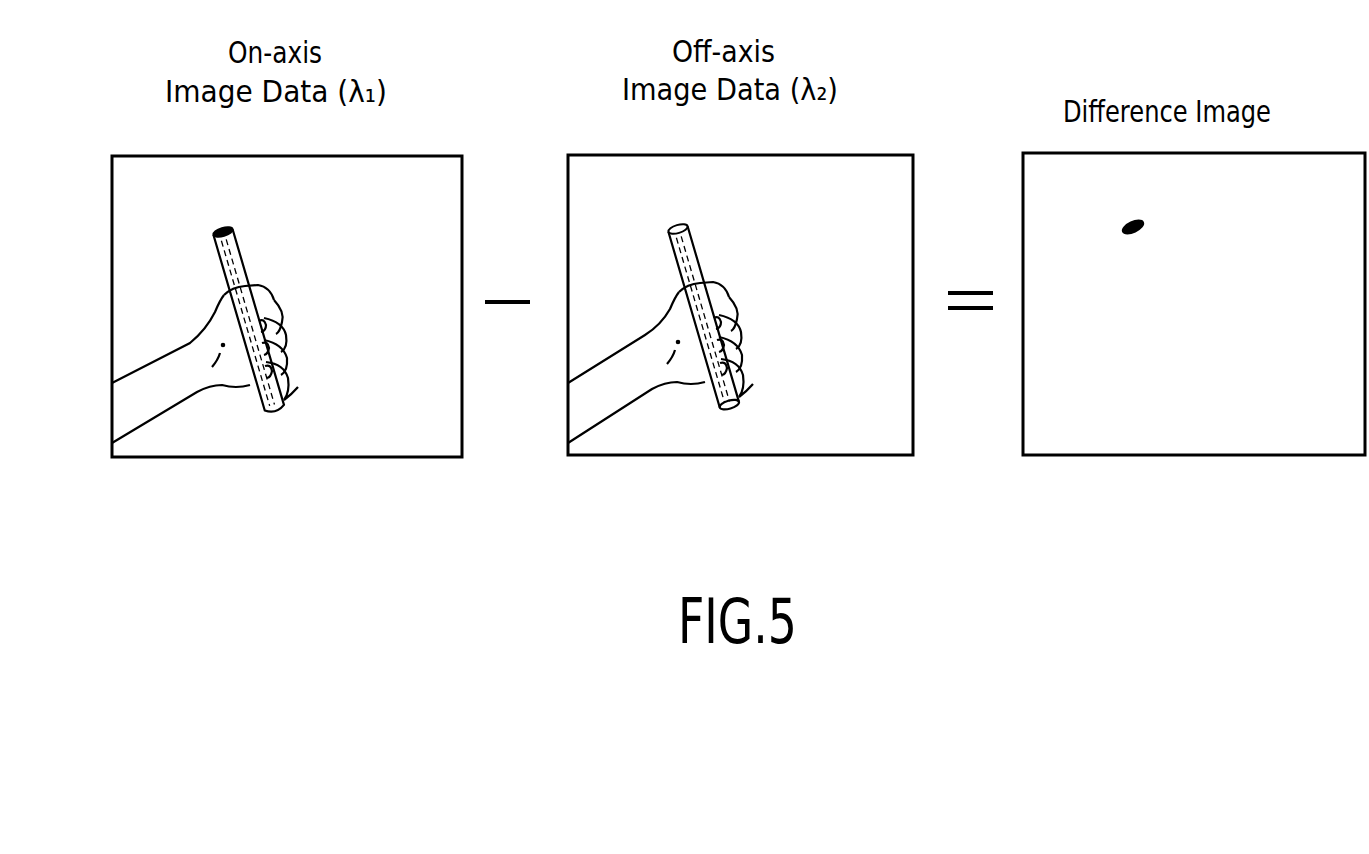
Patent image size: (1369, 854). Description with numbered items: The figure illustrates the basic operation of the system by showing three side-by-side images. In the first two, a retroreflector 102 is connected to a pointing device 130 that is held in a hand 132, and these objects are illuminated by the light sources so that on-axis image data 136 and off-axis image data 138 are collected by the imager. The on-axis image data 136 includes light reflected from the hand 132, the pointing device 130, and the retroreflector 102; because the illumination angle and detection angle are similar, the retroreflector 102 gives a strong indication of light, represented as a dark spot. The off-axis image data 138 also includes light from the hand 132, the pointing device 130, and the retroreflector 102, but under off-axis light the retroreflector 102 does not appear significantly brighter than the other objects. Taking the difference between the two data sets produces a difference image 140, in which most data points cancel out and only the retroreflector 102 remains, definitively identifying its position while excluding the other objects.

The retroreflector 102 is at (220, 225).
The pointing device 130 is at (297, 387).
The hand 132 is at (225, 391).
The on-axis image data 136 is at (287, 283).
The off-axis image data 138 is at (740, 282).
The difference image 140 is at (1194, 274).